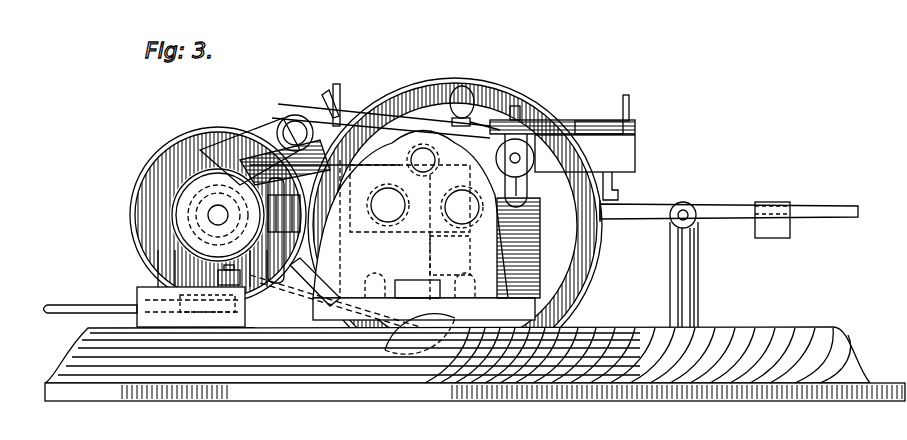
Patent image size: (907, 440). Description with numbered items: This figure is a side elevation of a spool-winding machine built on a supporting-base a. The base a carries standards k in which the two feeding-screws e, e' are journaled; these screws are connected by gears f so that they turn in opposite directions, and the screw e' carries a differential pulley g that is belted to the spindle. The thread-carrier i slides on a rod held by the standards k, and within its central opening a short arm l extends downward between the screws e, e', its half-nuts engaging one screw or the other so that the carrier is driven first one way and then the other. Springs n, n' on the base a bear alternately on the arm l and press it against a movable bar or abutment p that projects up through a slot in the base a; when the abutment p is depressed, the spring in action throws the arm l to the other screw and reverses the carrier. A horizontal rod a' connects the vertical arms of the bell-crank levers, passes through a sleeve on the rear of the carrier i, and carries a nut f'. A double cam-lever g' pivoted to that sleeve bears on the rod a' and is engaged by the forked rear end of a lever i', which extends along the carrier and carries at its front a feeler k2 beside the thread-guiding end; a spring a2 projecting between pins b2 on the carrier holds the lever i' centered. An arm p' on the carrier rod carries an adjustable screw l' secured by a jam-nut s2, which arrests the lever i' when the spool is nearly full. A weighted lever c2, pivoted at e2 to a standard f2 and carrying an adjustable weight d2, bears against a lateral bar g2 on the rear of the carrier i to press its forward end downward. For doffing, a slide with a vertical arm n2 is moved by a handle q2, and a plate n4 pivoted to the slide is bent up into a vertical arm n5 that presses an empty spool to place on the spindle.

The feeler k2 is at (214, 148).
The arm p' is at (283, 120).
The lever i' is at (455, 216).
The differential pulley g is at (531, 100).
The double cam-lever g' is at (562, 113).
The spring a2 is at (594, 126).
The pin b2 is at (629, 112).
The thread-carrier i is at (460, 209).
The rod a' is at (528, 158).
The nut f' is at (527, 170).
The gear f is at (532, 248).
The lateral bar g2 is at (612, 186).
The pivot e2 is at (685, 210).
The weighted lever c2 is at (723, 218).
The adjustable weight d2 is at (782, 236).
The standard f2 is at (670, 264).
The supporting-base a is at (475, 353).
The movable bar or abutment p is at (422, 236).
The feeding-screw e is at (388, 220).
The feeding-screw e' is at (462, 219).
The short arm l is at (450, 255).
The vertical arm n5 is at (300, 228).
The standard k is at (345, 295).
The vertical arm n2 is at (165, 258).
The plate n4 is at (178, 290).
The jam-nut s2 is at (240, 270).
The handle q2 is at (92, 309).
The screw l' is at (207, 325).
The spring n is at (420, 337).
The spring n' is at (420, 301).